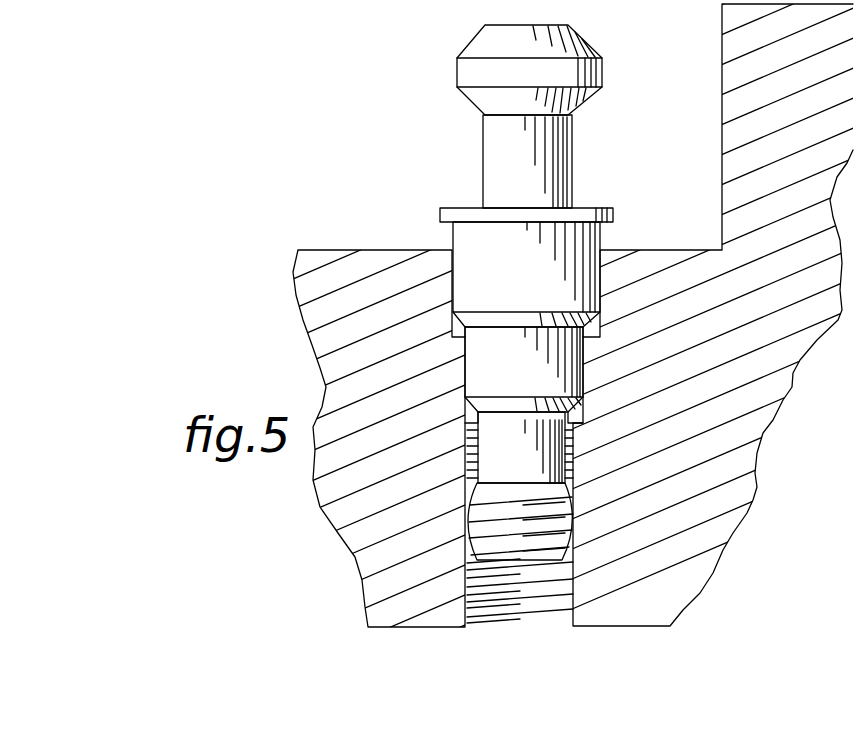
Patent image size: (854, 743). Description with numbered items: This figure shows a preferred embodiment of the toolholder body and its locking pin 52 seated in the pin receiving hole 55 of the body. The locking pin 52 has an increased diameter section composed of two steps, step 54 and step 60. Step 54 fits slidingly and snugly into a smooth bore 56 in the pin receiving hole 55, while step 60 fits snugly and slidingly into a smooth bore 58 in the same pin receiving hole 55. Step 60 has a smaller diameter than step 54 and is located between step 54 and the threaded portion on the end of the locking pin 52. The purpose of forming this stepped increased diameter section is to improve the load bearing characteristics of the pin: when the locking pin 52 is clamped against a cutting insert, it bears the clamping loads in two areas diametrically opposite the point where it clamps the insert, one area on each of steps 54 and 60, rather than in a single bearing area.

The locking pin 52 is at (452, 150).
The step 54 is at (499, 279).
The smooth bore 56 is at (600, 333).
The step 60 is at (508, 374).
The smooth bore 58 is at (582, 410).
The pin receiving hole 55 is at (543, 605).